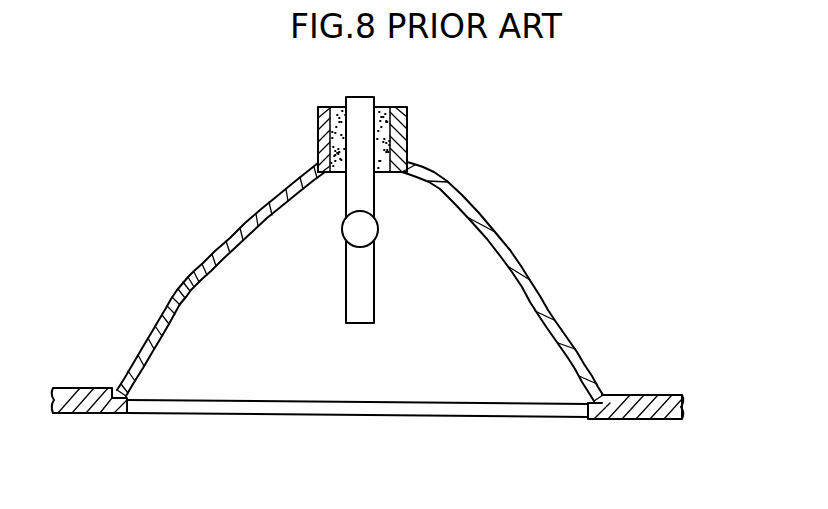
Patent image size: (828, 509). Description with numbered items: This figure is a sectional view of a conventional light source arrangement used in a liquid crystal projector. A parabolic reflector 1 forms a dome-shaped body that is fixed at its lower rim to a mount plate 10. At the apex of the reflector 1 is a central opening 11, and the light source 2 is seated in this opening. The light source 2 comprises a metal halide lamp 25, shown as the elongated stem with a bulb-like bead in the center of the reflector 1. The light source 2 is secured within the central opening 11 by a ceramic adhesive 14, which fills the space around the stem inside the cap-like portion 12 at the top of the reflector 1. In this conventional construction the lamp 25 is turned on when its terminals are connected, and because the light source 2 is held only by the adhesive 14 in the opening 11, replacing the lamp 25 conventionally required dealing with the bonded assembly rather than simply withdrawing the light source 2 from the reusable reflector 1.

The parabolic reflector 1 is at (540, 288).
The light source 2 is at (336, 283).
The mount plate 10 is at (652, 395).
The central opening 11 is at (383, 175).
The cap 12 is at (407, 133).
The ceramic adhesive 14 is at (385, 125).
The metal halide lamp 25 is at (352, 232).